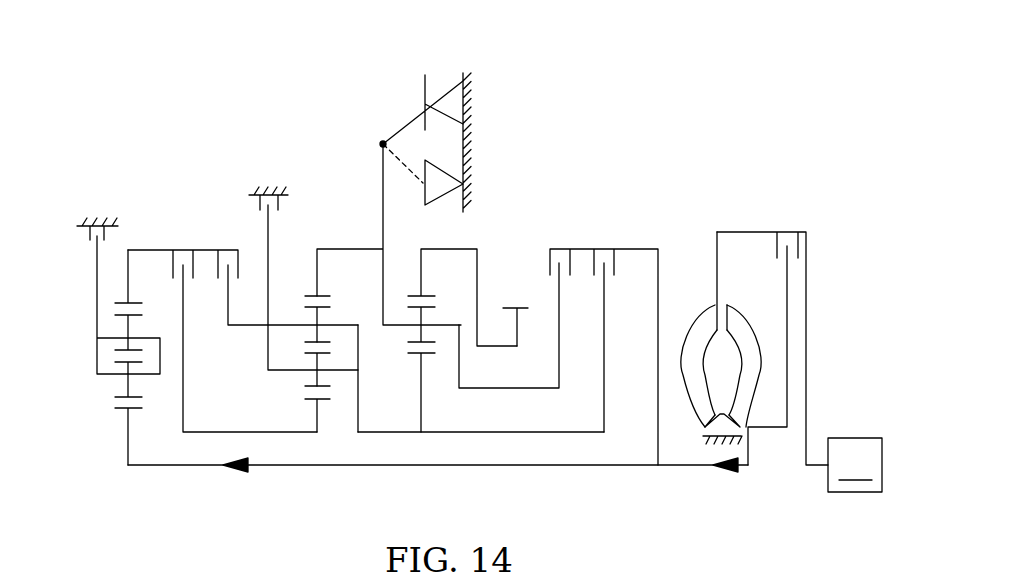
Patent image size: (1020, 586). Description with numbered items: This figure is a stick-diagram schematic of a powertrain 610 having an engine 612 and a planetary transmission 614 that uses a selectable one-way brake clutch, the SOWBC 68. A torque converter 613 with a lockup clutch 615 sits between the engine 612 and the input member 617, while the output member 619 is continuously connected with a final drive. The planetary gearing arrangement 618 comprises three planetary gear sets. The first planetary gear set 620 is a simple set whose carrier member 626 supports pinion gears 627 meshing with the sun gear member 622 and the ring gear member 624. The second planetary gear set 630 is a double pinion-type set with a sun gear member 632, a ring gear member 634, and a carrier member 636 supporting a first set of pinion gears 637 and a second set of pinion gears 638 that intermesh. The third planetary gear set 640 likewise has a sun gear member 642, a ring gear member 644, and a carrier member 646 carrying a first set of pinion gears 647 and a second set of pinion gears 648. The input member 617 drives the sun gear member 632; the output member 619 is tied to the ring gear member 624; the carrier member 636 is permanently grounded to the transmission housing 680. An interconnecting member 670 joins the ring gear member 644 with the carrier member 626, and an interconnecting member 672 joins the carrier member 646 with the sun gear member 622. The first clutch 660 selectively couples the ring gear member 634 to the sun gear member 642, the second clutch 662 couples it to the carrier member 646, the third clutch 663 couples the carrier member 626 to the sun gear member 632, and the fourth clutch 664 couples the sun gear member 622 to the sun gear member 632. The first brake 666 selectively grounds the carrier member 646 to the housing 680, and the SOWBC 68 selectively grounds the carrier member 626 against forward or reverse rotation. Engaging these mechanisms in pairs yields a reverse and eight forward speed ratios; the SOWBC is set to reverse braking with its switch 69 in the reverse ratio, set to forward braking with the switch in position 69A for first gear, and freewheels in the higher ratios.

The powertrain 610 is at (672, 138).
The engine 612 is at (855, 465).
The torque converter 613 is at (756, 440).
The planetary transmission 614 is at (649, 210).
The lockup clutch 615 is at (791, 270).
The input member 617 is at (705, 466).
The planetary gearing arrangement 618 is at (540, 78).
The output member 619 is at (530, 324).
The first planetary gear set 620 is at (432, 362).
The sun gear member 622 is at (421, 357).
The ring gear member 624 is at (423, 292).
The carrier member 626 is at (460, 328).
The pinion gears 627 is at (421, 338).
The second planetary gear set 630 is at (117, 417).
The sun gear member 632 is at (133, 410).
The ring gear member 634 is at (117, 302).
The carrier member 636 is at (97, 358).
The first set of pinion gears 637 is at (120, 386).
The second set of pinion gears 638 is at (122, 326).
The third planetary gear set 640 is at (329, 410).
The sun gear member 642 is at (310, 403).
The ring gear member 644 is at (322, 292).
The carrier member 646 is at (270, 370).
The first set of pinion gears 647 is at (310, 381).
The second set of pinion gears 648 is at (317, 318).
The first clutch 660 is at (195, 288).
The second clutch 662 is at (238, 288).
The third clutch 663 is at (570, 290).
The fourth clutch 664 is at (615, 285).
The first brake 666 is at (284, 217).
The interconnecting member 670 is at (335, 249).
The interconnecting member 672 is at (388, 434).
The transmission housing 680 is at (118, 222).
The SOWBC 68 is at (397, 82).
The switch 69 is at (402, 122).
The switch position 69A is at (408, 172).